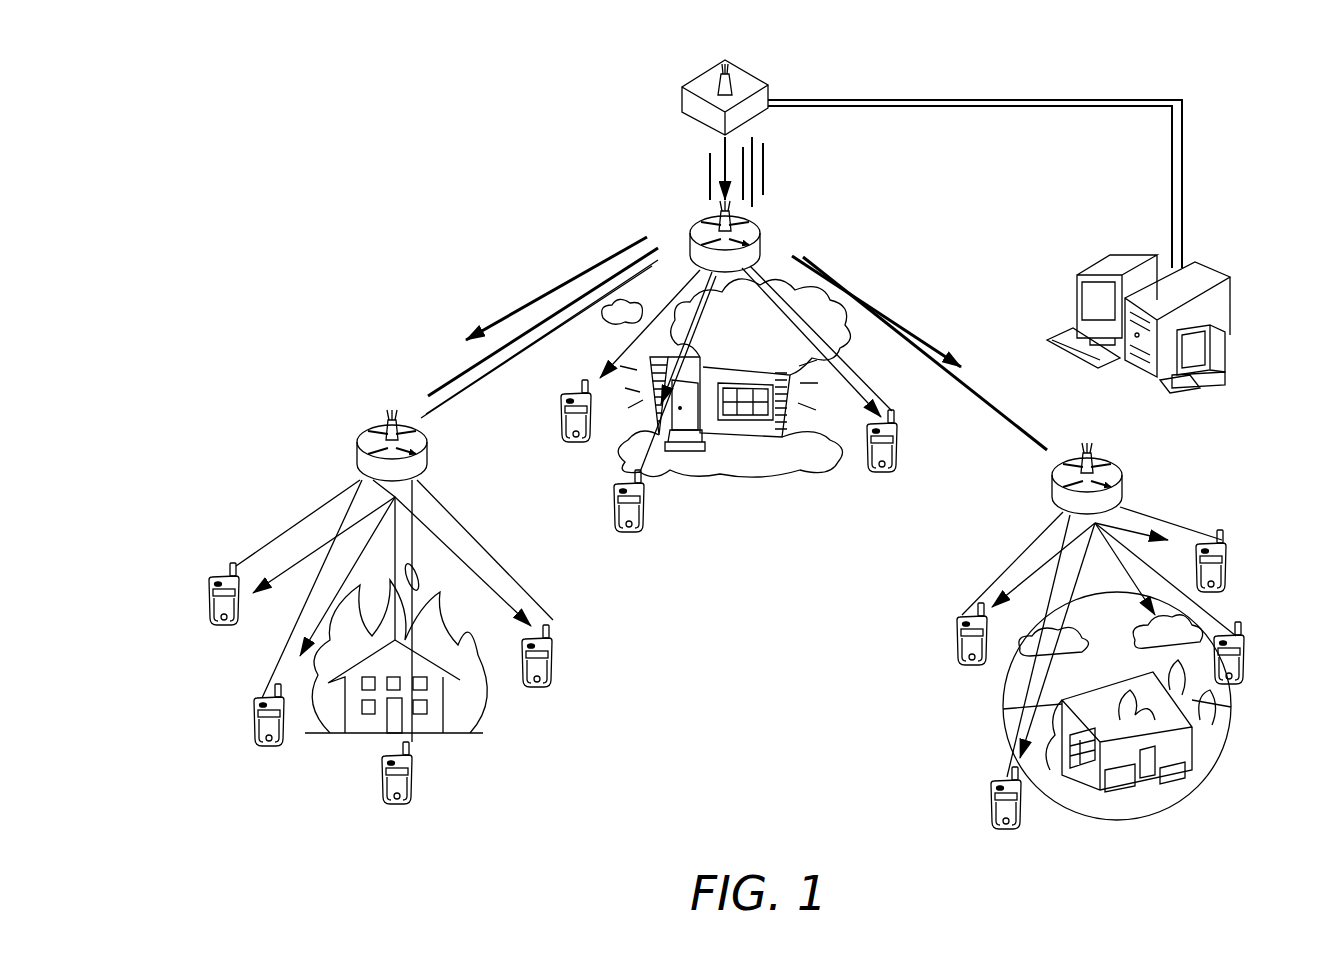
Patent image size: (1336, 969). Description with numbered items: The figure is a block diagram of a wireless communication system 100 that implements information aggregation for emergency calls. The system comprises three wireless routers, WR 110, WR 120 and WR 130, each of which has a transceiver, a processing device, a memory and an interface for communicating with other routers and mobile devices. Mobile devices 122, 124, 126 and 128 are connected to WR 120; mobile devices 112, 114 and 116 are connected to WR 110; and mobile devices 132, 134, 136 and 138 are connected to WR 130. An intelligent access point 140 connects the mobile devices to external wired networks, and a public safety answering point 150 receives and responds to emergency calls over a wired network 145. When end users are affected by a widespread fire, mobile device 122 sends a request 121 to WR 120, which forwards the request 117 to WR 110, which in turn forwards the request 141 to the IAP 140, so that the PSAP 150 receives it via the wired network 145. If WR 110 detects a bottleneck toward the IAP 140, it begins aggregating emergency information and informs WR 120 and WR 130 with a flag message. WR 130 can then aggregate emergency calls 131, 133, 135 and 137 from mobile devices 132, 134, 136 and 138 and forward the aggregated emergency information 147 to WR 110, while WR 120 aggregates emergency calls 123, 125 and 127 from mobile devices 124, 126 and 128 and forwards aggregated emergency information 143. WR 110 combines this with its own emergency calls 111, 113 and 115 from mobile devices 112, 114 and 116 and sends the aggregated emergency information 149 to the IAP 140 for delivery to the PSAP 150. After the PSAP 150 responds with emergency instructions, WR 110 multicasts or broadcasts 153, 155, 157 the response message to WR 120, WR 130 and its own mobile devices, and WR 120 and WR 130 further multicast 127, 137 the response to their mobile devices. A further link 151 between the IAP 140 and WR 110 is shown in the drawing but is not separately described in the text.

The wireless communication system 100 is at (1331, 101).
The wireless router 110 is at (792, 226).
The emergency call 111 is at (601, 362).
The mobile device 112 is at (568, 440).
The emergency call 113 is at (681, 465).
The mobile device 114 is at (628, 534).
The emergency call 115 is at (862, 381).
The mobile device 116 is at (895, 409).
The request 117 is at (500, 422).
The wireless router 120 is at (327, 424).
The request 121 is at (302, 518).
The mobile device 122 is at (208, 603).
The emergency call 123 is at (340, 558).
The mobile device 124 is at (254, 721).
The emergency call 125 is at (416, 599).
The mobile device 126 is at (415, 781).
The emergency call / multicast 127 is at (470, 531).
The mobile device 128 is at (553, 622).
The wireless router 130 is at (1156, 476).
The emergency call 131 is at (1034, 541).
The mobile device 132 is at (957, 640).
The emergency call 133 is at (1012, 730).
The mobile device 134 is at (992, 797).
The emergency call 135 is at (1226, 614).
The mobile device 136 is at (1246, 665).
The emergency call / multicast 137 is at (1172, 524).
The mobile device 138 is at (1228, 573).
The intelligent access point 140 is at (648, 85).
The request 141 is at (812, 180).
The aggregated emergency information 143 is at (440, 373).
The wired network 145 is at (970, 108).
The aggregated emergency information 147 is at (997, 403).
The aggregated emergency information 149 is at (708, 176).
The public safety answering point 150 is at (1210, 412).
The communication link 151 is at (722, 147).
The multicast/broadcast of response message 153 is at (550, 288).
The multicast/broadcast of response message 155 is at (885, 304).
The multicast/broadcast of response message 157 is at (829, 343).